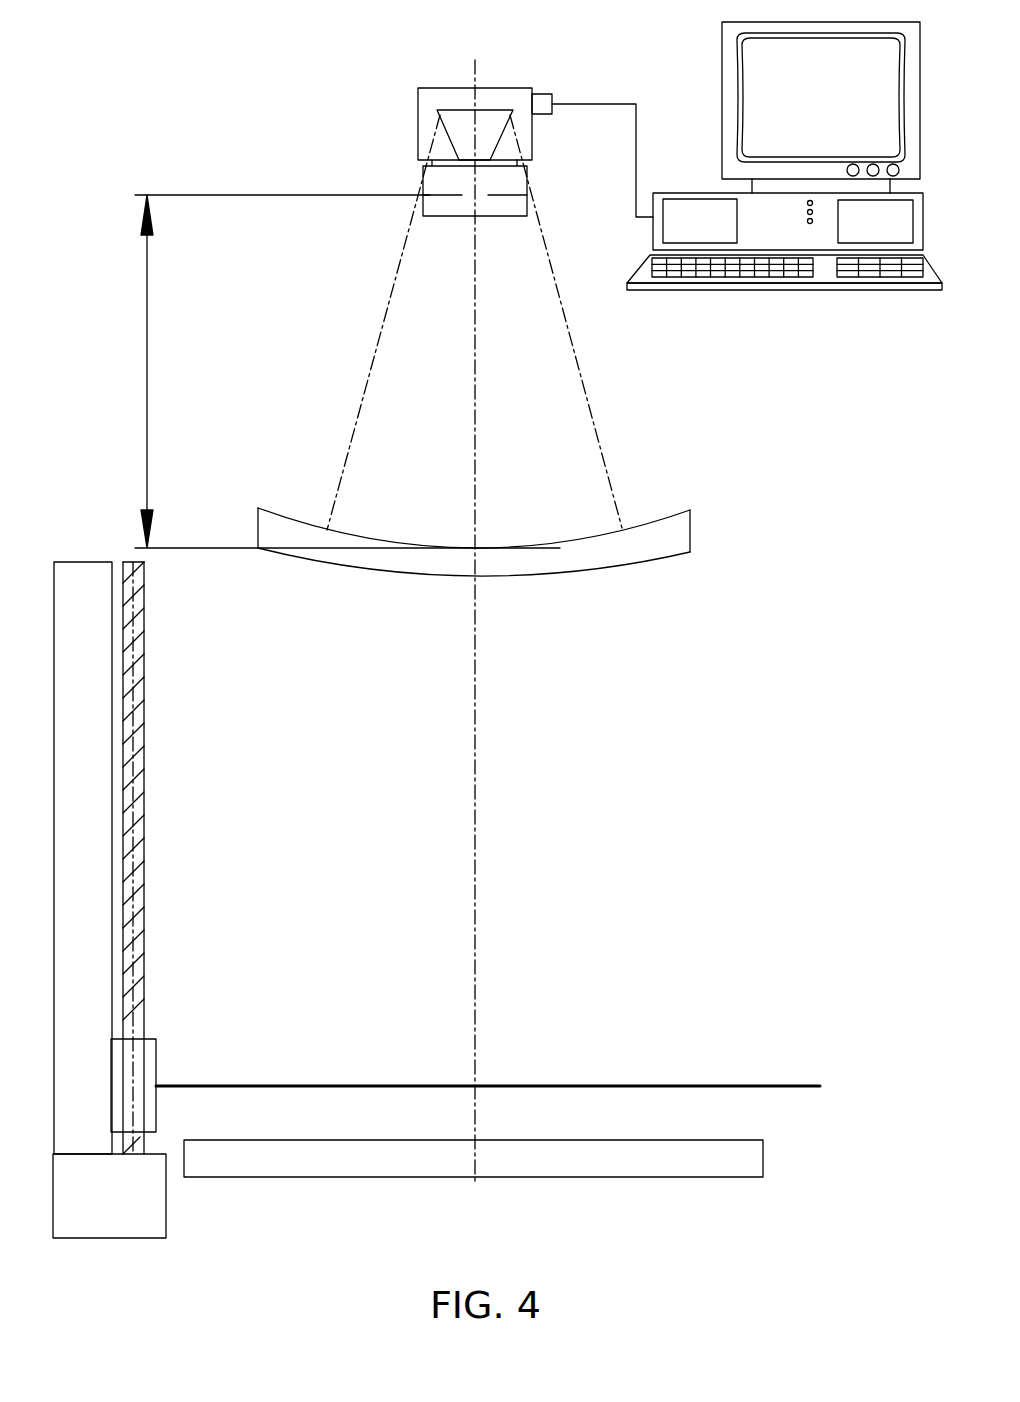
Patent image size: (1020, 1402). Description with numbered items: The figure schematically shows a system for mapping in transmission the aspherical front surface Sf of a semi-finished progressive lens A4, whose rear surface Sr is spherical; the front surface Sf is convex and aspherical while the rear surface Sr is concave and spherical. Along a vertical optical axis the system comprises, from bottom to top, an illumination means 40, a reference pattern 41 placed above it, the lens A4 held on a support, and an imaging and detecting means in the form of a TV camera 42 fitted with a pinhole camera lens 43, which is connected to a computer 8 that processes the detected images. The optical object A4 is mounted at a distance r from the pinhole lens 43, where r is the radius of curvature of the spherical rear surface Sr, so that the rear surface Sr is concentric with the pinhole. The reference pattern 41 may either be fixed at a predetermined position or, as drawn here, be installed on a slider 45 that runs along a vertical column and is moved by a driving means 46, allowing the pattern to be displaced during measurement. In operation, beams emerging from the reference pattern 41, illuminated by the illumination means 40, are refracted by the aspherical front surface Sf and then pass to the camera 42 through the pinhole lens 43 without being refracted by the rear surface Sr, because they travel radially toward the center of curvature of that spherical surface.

The TV camera 42 is at (430, 93).
The pinhole camera lens 43 is at (423, 178).
The computer 8 is at (763, 213).
The semi-finished progressive lens A4 is at (675, 533).
The rear surface Sr is at (666, 515).
The front surface Sf is at (628, 565).
The distance r is at (347, 371).
The slider 45 is at (142, 1057).
The driving means 46 is at (142, 1183).
The reference pattern 41 is at (755, 1085).
The illumination means 40 is at (742, 1163).